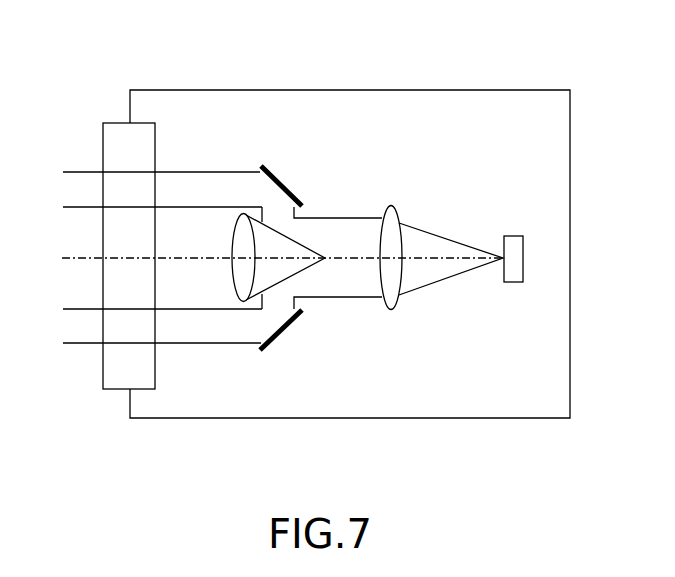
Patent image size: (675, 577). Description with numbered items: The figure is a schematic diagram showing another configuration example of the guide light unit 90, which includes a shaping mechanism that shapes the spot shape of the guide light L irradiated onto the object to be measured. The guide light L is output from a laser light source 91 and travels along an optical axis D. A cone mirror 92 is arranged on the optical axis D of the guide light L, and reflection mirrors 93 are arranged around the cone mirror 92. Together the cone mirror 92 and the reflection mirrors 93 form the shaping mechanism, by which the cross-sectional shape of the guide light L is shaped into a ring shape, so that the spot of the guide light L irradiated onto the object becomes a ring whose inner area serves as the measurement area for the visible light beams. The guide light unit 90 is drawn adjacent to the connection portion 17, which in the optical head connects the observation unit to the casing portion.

The guide light unit 90 is at (450, 89).
The connection portion 17 is at (103, 130).
The cone mirror 92 is at (242, 298).
The reflection mirrors 93 is at (292, 190).
The guide light L is at (348, 218).
The laser light source 91 is at (523, 258).
The optical axis D is at (358, 262).